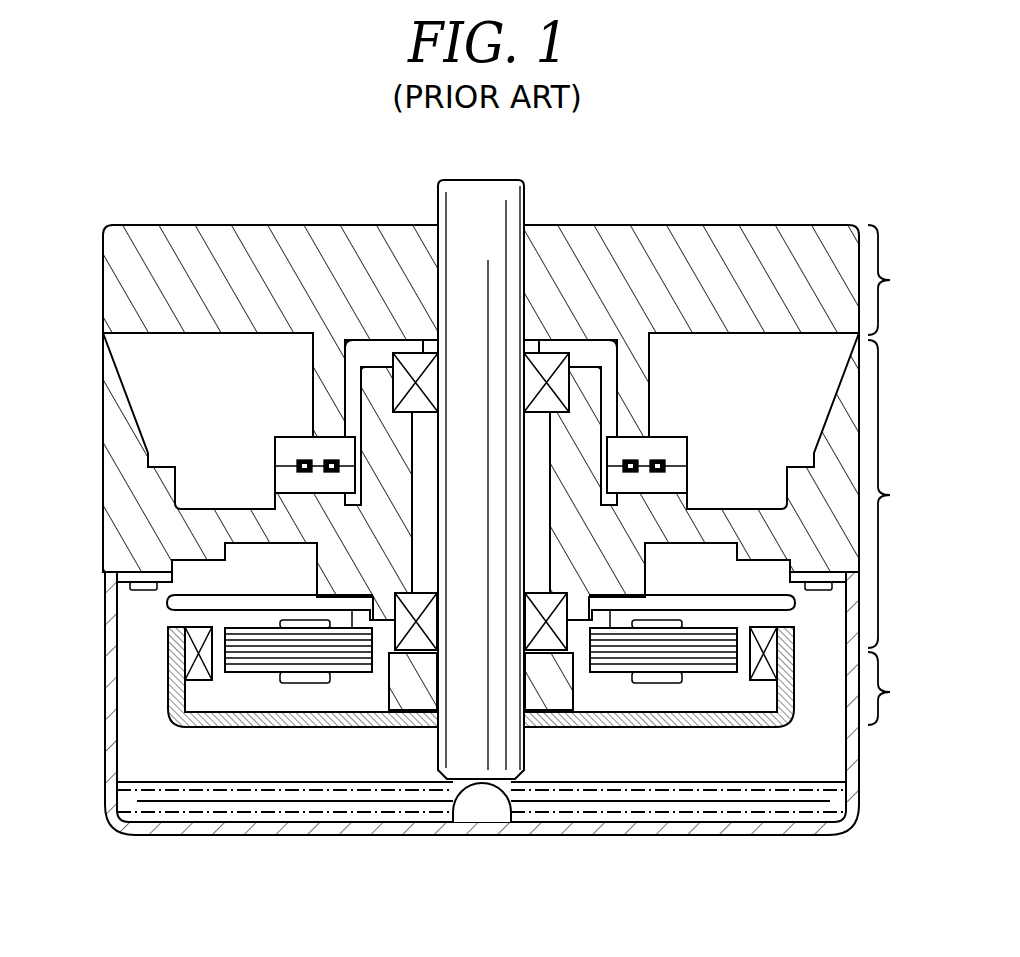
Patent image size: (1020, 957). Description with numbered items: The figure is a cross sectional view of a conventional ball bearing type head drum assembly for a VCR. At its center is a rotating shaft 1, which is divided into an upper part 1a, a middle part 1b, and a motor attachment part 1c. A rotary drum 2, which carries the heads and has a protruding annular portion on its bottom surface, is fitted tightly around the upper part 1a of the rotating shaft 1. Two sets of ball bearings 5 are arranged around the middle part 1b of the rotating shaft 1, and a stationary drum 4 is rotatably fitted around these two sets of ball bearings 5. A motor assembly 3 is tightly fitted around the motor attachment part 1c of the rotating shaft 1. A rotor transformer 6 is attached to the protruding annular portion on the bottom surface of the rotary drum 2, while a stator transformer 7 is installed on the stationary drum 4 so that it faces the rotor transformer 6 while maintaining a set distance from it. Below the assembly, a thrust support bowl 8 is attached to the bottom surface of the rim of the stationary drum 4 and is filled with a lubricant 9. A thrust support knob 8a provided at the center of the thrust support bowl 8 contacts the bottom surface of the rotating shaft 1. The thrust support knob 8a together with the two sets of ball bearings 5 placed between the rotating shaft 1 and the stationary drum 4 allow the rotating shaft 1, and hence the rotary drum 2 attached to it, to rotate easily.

The rotating shaft 1 is at (525, 203).
The upper part 1a is at (902, 280).
The middle part 1b is at (904, 494).
The motor attachment part 1c is at (903, 688).
The rotary drum 2 is at (117, 296).
The motor assembly 3 is at (163, 659).
The stationary drum 4 is at (120, 497).
The ball bearings 5 is at (405, 382).
The rotor transformer 6 is at (292, 452).
The stator transformer 7 is at (292, 482).
The thrust support bowl 8 is at (123, 822).
The thrust support knob 8a is at (481, 807).
The lubricant 9 is at (622, 800).